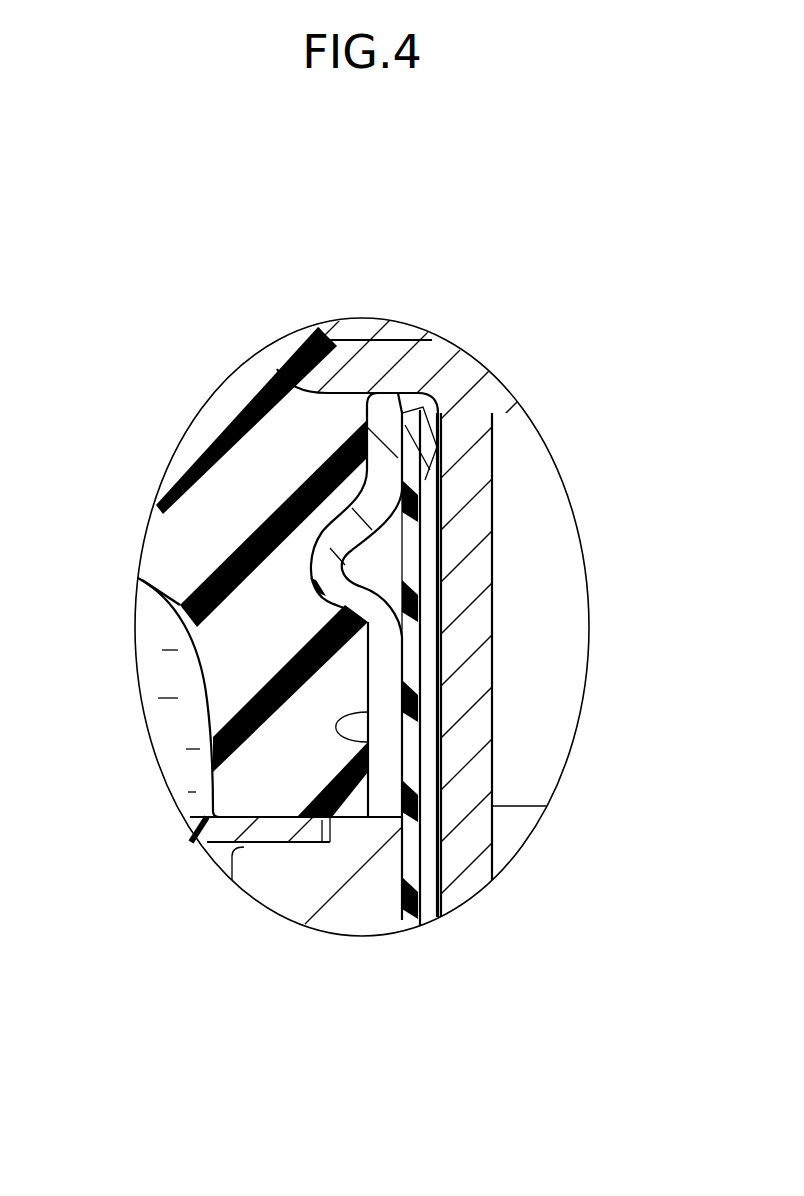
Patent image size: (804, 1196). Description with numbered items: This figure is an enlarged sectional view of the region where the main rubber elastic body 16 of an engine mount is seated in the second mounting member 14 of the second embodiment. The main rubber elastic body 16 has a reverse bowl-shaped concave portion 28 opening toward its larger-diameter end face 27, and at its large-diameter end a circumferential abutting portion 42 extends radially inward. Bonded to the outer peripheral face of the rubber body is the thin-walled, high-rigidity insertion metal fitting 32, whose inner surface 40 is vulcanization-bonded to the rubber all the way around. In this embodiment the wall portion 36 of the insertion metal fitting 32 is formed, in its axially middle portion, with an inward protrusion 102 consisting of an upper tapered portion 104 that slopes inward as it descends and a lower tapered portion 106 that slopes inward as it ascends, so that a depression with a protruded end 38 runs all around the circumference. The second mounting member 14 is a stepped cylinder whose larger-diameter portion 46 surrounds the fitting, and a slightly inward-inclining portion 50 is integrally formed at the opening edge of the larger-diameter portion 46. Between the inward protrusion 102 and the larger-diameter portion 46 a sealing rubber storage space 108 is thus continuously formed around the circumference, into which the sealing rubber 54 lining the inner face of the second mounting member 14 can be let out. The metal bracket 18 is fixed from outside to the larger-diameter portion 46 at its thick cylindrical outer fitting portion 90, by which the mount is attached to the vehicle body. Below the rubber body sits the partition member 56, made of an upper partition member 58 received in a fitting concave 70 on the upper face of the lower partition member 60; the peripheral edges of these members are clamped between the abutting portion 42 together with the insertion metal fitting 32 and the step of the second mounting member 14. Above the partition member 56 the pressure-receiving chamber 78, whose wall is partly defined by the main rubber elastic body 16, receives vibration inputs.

The second mounting member 14 is at (447, 538).
The main rubber elastic body 16 is at (252, 437).
The metal bracket 18 is at (397, 338).
The larger-diameter end face 27 is at (215, 860).
The concave portion 28 is at (178, 610).
The insertion metal fitting 32 is at (407, 483).
The wall portion 36 is at (390, 607).
The protruded end 38 is at (323, 568).
The inner surface 40 is at (365, 742).
The abutting portion 42 is at (238, 793).
The larger-diameter portion 46 is at (427, 667).
The inward inclining portion 50 is at (418, 440).
The sealing rubber 54 is at (413, 640).
The partition member 56 is at (400, 860).
The upper partition member 58 is at (252, 833).
The lower partition member 60 is at (377, 903).
The fitting concave 70 is at (327, 835).
The pressure-receiving chamber 78 is at (163, 673).
The outer fitting portion 90 is at (420, 473).
The inward protrusion 102 is at (327, 512).
The upper tapered portion 104 is at (343, 538).
The lower tapered portion 106 is at (348, 592).
The sealing rubber storage space 108 is at (377, 562).